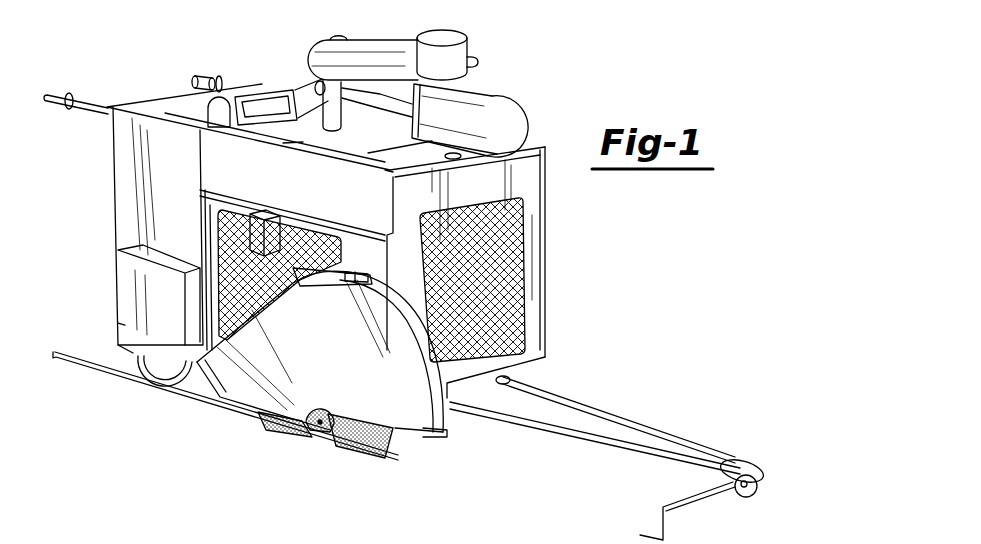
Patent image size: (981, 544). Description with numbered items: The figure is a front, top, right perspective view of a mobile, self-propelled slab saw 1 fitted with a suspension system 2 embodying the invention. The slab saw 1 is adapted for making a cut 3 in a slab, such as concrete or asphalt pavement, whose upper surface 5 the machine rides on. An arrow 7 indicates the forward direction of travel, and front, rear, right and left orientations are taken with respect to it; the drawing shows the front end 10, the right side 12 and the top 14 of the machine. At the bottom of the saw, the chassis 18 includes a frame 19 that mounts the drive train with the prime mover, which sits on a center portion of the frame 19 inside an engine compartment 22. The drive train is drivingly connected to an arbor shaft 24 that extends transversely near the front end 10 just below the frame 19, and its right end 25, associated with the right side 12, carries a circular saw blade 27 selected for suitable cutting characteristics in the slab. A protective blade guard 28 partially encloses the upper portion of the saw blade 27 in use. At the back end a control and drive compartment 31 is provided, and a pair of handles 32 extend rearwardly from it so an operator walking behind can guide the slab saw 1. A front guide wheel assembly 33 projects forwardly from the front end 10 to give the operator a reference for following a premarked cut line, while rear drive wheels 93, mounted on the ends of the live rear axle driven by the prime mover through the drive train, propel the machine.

The slab saw 1 is at (640, 47).
The suspension system 2 is at (144, 403).
The cut 3 is at (225, 406).
The upper surface 5 is at (507, 502).
The arrow 7 is at (855, 527).
The front end 10 is at (544, 358).
The right side 12 is at (315, 185).
The top 14 is at (372, 140).
The chassis 18 is at (117, 339).
The frame 19 is at (118, 322).
The engine compartment 22 is at (544, 148).
The arbor shaft 24 is at (316, 428).
The right end 25 is at (300, 430).
The circular saw blade 27 is at (414, 463).
The blade guard 28 is at (468, 438).
The control and drive compartment 31 is at (108, 107).
The handles 32 is at (198, 80).
The front guide wheel assembly 33 is at (757, 465).
The rear drive wheels 93 is at (173, 380).